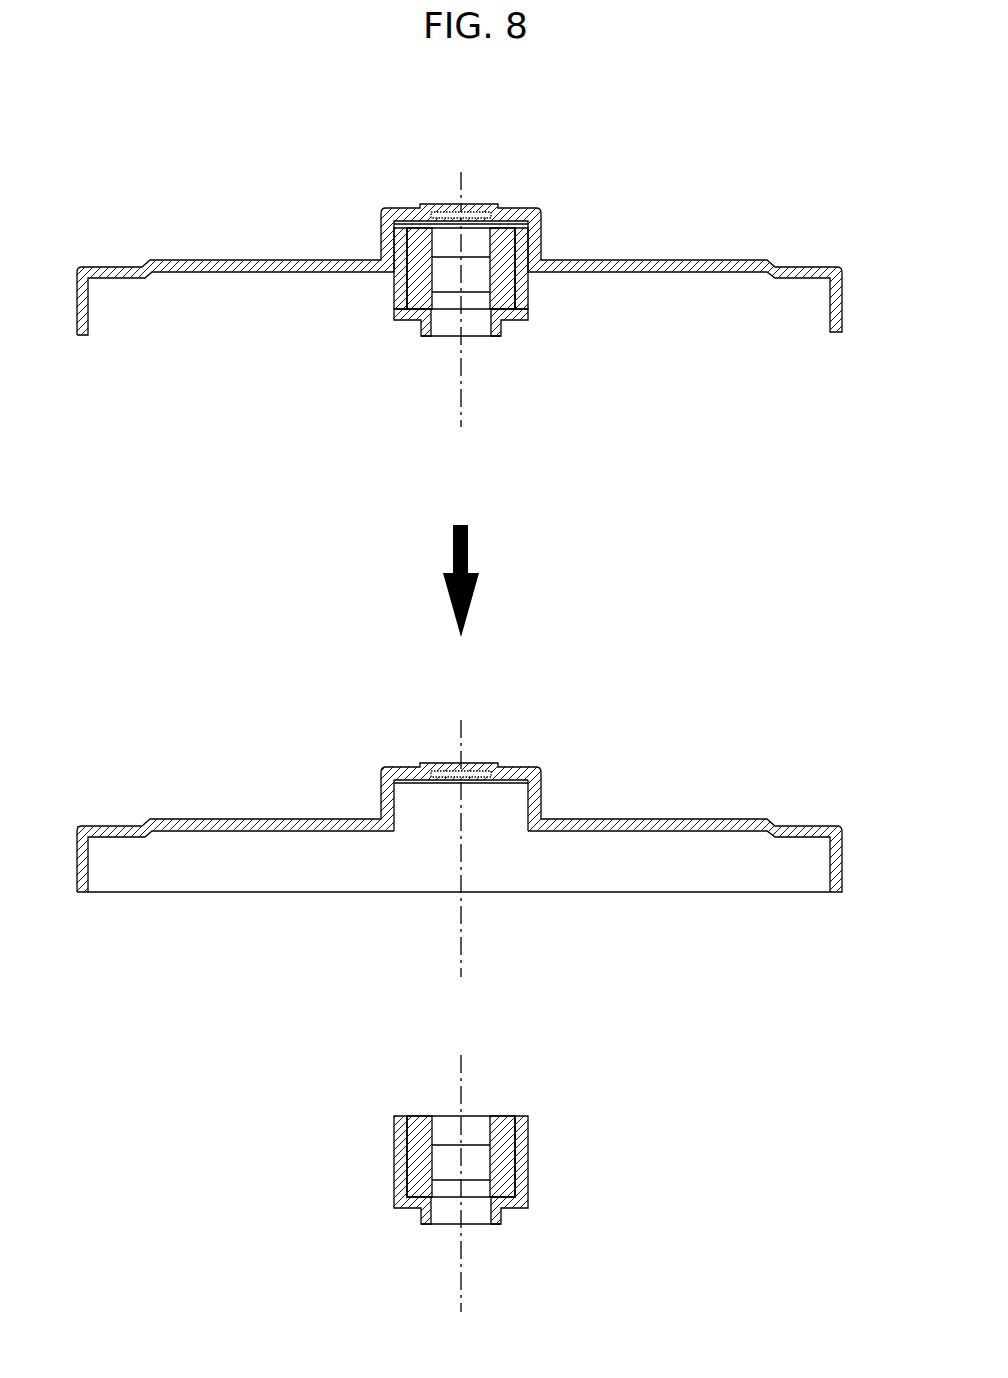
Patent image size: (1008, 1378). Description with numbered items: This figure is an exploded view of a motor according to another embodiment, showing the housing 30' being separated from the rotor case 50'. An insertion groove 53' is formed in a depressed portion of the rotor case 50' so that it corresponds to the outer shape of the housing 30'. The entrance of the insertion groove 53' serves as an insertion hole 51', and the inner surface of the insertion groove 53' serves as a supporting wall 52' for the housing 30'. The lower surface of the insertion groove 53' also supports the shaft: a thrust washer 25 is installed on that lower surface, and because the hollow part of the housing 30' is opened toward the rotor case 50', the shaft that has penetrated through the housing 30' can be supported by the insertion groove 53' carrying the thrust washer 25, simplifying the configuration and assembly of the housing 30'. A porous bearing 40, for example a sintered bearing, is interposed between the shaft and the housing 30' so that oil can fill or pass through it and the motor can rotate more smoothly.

The thrust washer 25 is at (477, 207).
The housing 30' is at (524, 726).
The porous bearing 40 is at (407, 313).
The rotor case 50' is at (459, 517).
The insertion hole 51' is at (412, 882).
The supporting wall 52' is at (536, 887).
The insertion groove 53' is at (521, 452).